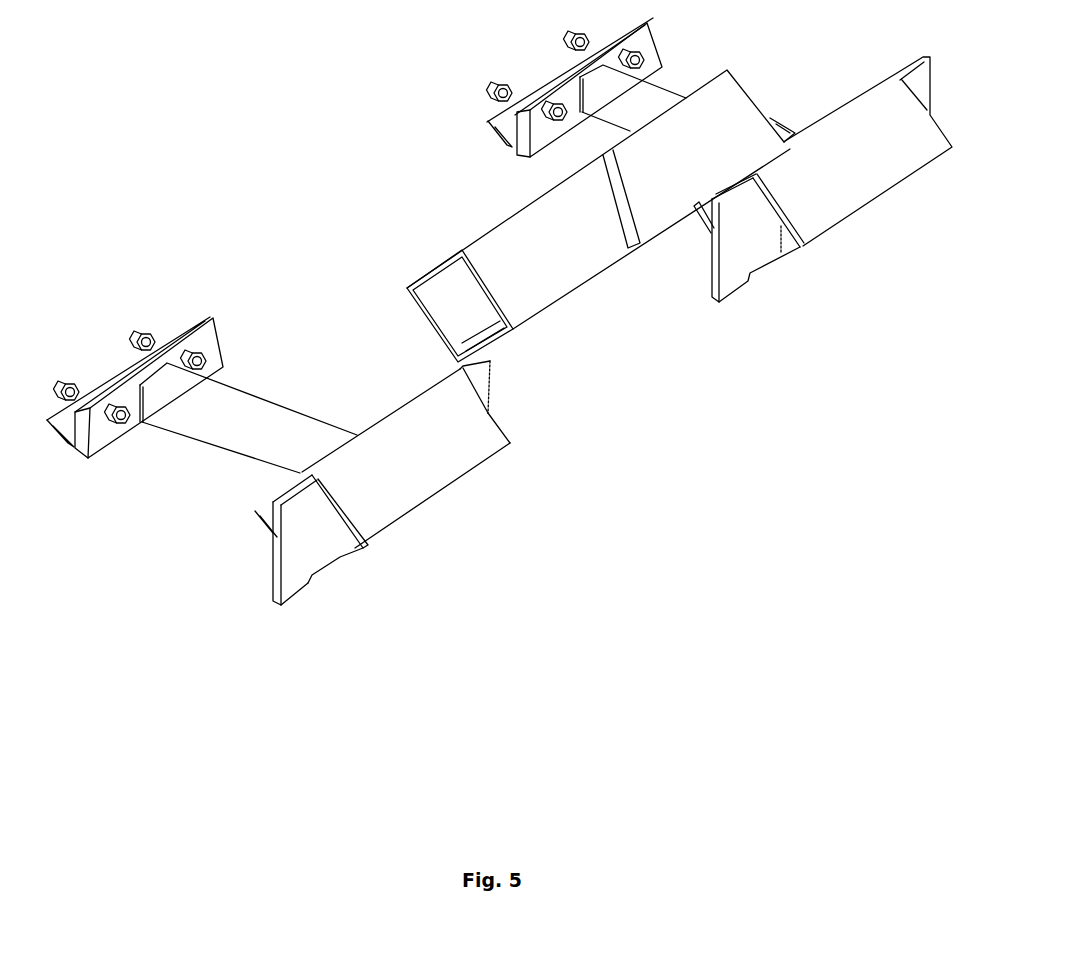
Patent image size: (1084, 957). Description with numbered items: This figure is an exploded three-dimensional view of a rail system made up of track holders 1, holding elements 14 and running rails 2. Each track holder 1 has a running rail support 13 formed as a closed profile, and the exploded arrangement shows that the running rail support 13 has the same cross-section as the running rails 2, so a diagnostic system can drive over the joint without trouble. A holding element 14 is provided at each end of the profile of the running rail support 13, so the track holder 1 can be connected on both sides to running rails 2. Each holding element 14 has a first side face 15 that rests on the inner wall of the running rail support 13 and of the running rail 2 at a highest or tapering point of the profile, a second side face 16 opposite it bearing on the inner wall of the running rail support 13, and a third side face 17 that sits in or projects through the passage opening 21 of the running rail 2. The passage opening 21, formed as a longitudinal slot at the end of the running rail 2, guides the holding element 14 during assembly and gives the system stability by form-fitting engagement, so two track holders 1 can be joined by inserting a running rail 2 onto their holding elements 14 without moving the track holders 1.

The track holder 1 is at (853, 254).
The running rail 2 is at (527, 240).
The running rail support 13 is at (433, 473).
The holding element 14 is at (490, 386).
The first side face 15 is at (275, 503).
The second side face 16 is at (337, 564).
The third side face 17 is at (303, 593).
The passage opening 21 is at (455, 351).